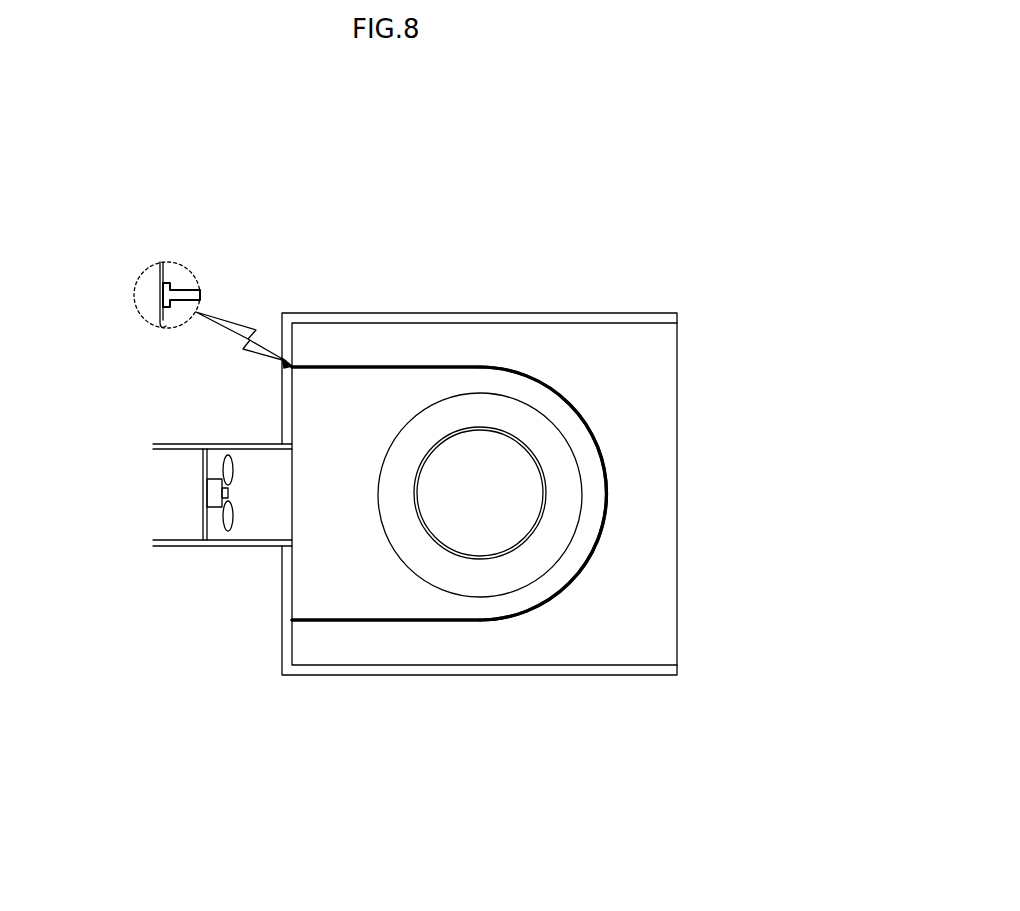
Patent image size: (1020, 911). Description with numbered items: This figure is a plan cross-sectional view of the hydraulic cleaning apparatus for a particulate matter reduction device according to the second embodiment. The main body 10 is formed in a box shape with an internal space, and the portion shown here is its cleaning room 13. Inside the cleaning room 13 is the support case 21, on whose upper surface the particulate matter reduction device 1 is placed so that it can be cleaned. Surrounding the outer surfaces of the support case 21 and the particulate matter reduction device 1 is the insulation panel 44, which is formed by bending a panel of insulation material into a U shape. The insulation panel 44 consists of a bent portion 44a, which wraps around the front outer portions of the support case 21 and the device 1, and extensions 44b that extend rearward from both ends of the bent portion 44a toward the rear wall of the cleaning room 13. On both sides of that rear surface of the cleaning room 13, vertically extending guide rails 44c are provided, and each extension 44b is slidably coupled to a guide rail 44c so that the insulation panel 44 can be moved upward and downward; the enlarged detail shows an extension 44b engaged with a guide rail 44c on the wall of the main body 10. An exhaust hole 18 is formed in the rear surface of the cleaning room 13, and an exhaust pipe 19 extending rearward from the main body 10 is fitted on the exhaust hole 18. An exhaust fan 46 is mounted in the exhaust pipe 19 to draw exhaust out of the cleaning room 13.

The particulate matter reduction device 1 is at (548, 512).
The main body 10 is at (591, 313).
The cleaning room 13 is at (610, 366).
The exhaust hole 18 is at (290, 545).
The exhaust pipe 19 is at (182, 443).
The support case 21 is at (446, 393).
The insulation panel 44 is at (466, 628).
The bent portion 44a is at (604, 457).
The extensions 44b is at (357, 366).
The guide rails 44c is at (164, 264).
The exhaust fan 46 is at (203, 527).